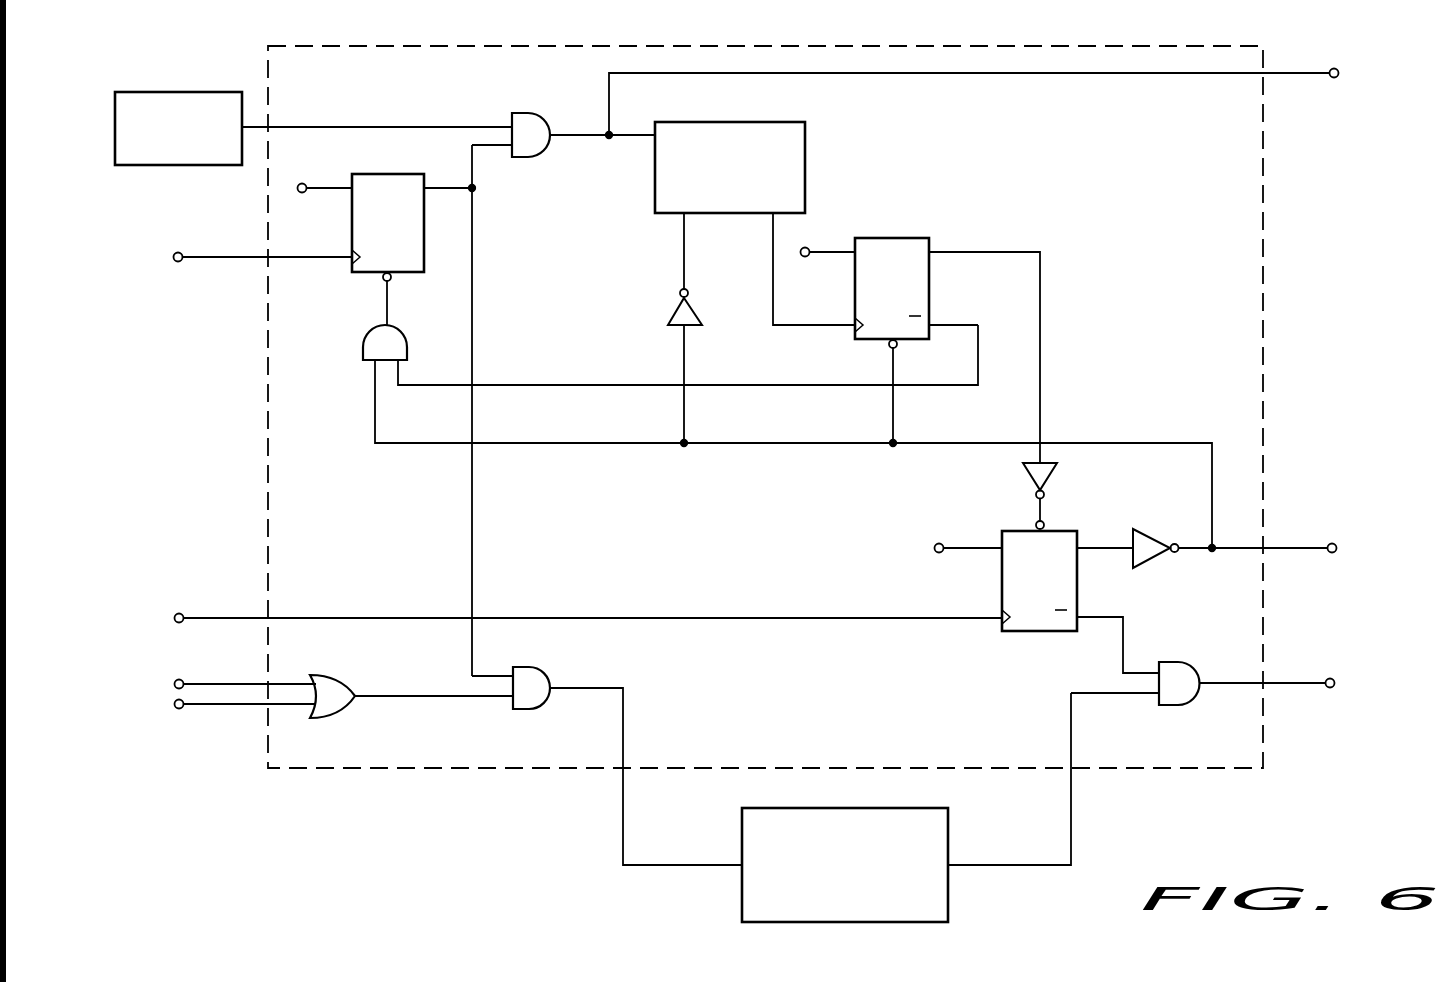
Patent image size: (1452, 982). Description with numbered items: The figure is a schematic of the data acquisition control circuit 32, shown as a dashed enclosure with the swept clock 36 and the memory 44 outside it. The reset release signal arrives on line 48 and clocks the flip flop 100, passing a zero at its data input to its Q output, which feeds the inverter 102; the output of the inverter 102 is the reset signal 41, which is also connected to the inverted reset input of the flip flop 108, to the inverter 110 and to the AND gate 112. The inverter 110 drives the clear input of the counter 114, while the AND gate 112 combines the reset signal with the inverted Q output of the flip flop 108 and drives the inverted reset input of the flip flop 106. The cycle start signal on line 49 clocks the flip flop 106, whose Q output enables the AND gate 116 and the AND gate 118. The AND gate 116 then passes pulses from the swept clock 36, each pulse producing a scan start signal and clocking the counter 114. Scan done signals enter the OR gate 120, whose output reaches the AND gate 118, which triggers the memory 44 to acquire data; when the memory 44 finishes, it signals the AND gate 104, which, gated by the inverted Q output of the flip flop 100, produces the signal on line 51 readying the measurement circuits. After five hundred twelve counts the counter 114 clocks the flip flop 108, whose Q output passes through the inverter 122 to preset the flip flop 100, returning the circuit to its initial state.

The data acquisition control circuit 32 is at (268, 380).
The swept clock 36 is at (198, 58).
The AND gate 116 is at (545, 84).
The counter 114 is at (805, 152).
The inverter 110 is at (672, 312).
The flip flop 106 is at (410, 140).
The line 49 is at (240, 203).
The AND gate 112 is at (363, 340).
The flip flop 108 is at (918, 200).
The inverter 122 is at (1023, 468).
The flip flop 100 is at (1018, 631).
The inverter 102 is at (1152, 560).
The reset signal 41 is at (1328, 510).
The line 48 is at (243, 588).
The OR gate 120 is at (336, 710).
The AND gate 118 is at (540, 668).
The AND gate 104 is at (1197, 705).
The line 51 is at (1290, 683).
The memory 44 is at (742, 888).